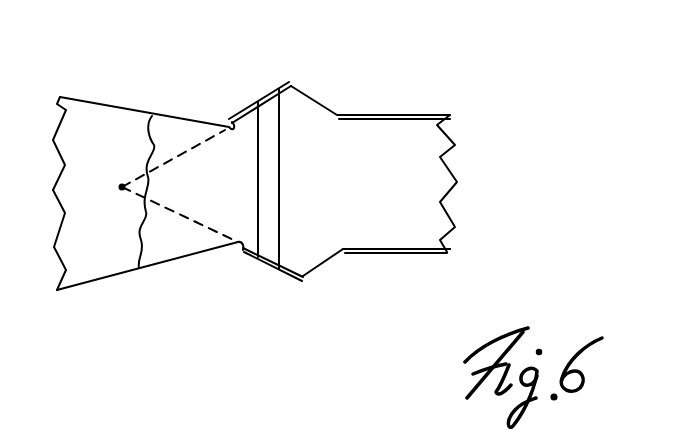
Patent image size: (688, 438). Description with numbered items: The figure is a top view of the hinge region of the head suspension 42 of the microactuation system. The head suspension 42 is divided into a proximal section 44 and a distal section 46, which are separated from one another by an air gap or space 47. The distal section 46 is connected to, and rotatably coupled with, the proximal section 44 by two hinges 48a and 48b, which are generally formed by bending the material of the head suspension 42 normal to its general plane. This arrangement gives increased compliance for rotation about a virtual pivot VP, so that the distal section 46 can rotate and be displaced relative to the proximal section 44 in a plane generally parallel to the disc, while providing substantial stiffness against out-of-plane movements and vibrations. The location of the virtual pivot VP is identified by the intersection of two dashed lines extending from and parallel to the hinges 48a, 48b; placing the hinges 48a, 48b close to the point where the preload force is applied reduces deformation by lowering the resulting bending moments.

The head suspension 42 is at (333, 93).
The proximal section 44 is at (177, 242).
The distal section 46 is at (345, 218).
The space 47 is at (266, 176).
The hinge 48a is at (262, 101).
The hinge 48b is at (266, 266).
The virtual pivot VP is at (122, 187).